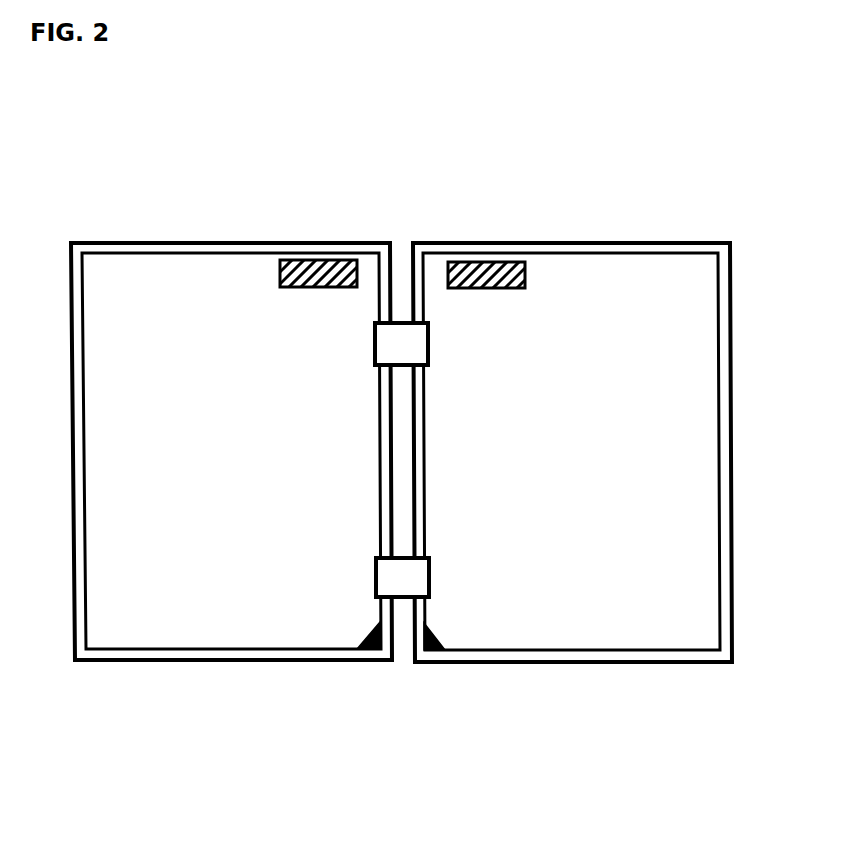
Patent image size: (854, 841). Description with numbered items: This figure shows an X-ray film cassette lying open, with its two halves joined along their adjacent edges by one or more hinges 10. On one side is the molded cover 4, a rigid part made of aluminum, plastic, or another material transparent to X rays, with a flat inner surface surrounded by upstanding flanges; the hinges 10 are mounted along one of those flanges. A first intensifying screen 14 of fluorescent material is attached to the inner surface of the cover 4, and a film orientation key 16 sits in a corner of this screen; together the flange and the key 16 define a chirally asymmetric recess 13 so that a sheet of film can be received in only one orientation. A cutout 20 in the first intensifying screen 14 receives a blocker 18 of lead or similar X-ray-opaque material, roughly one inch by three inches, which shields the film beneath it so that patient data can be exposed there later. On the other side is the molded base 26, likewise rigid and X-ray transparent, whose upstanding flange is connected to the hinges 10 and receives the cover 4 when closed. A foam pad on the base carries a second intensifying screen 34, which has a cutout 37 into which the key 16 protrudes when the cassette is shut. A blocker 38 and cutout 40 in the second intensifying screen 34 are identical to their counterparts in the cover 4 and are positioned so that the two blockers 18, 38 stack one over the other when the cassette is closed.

The cover 4 is at (597, 662).
The hinges 10 is at (402, 460).
The chirally asymmetric recess 13 is at (723, 412).
The first intensifying screen 14 is at (572, 452).
The film orientation key 16 is at (435, 645).
The blocker 18 is at (482, 267).
The cutout 20 is at (525, 275).
The base 26 is at (245, 662).
The second intensifying screen 34 is at (231, 451).
The cutout 37 is at (373, 645).
The blocker 38 is at (328, 265).
The cutout 40 is at (280, 273).